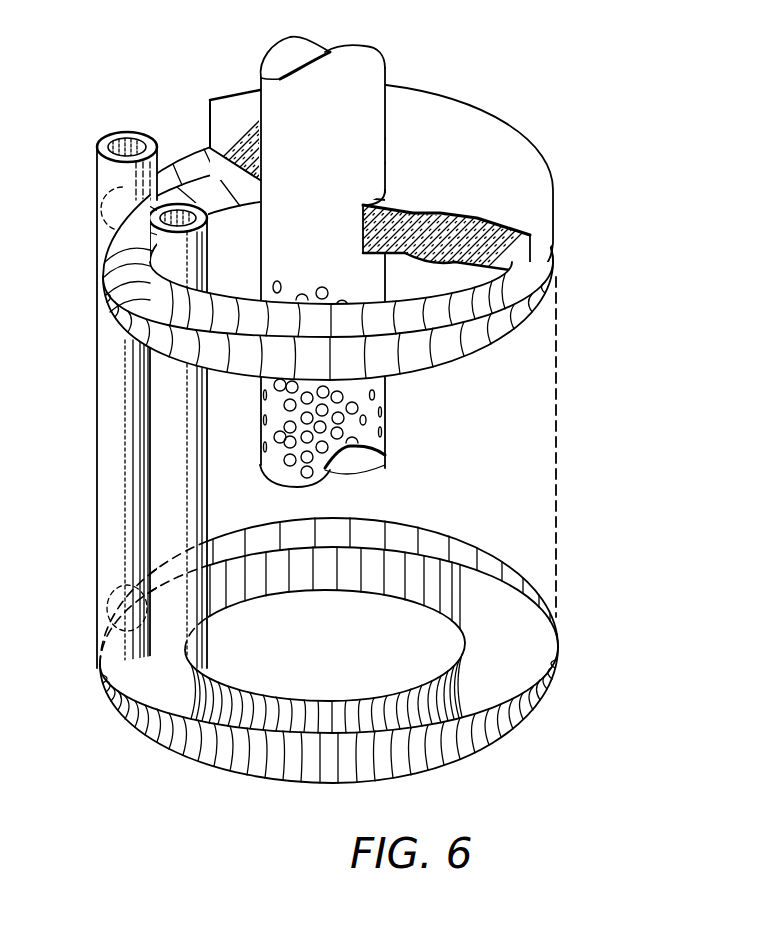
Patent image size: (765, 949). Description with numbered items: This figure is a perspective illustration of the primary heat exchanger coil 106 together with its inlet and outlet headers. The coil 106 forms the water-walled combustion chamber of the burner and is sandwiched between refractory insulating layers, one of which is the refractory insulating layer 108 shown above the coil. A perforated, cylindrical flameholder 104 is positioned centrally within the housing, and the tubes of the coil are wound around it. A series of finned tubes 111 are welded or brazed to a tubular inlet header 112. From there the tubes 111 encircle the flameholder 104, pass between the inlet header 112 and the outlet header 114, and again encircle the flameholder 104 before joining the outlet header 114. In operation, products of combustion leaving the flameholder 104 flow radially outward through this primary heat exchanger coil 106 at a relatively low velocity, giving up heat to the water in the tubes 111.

The perforated cylindrical flameholder 104 is at (387, 432).
The primary heat exchanger coil 106 is at (578, 403).
The refractory insulating layer 108 is at (448, 105).
The finned tubes 111 is at (183, 157).
The tubular inlet header 112 is at (127, 132).
The outlet header 114 is at (160, 254).